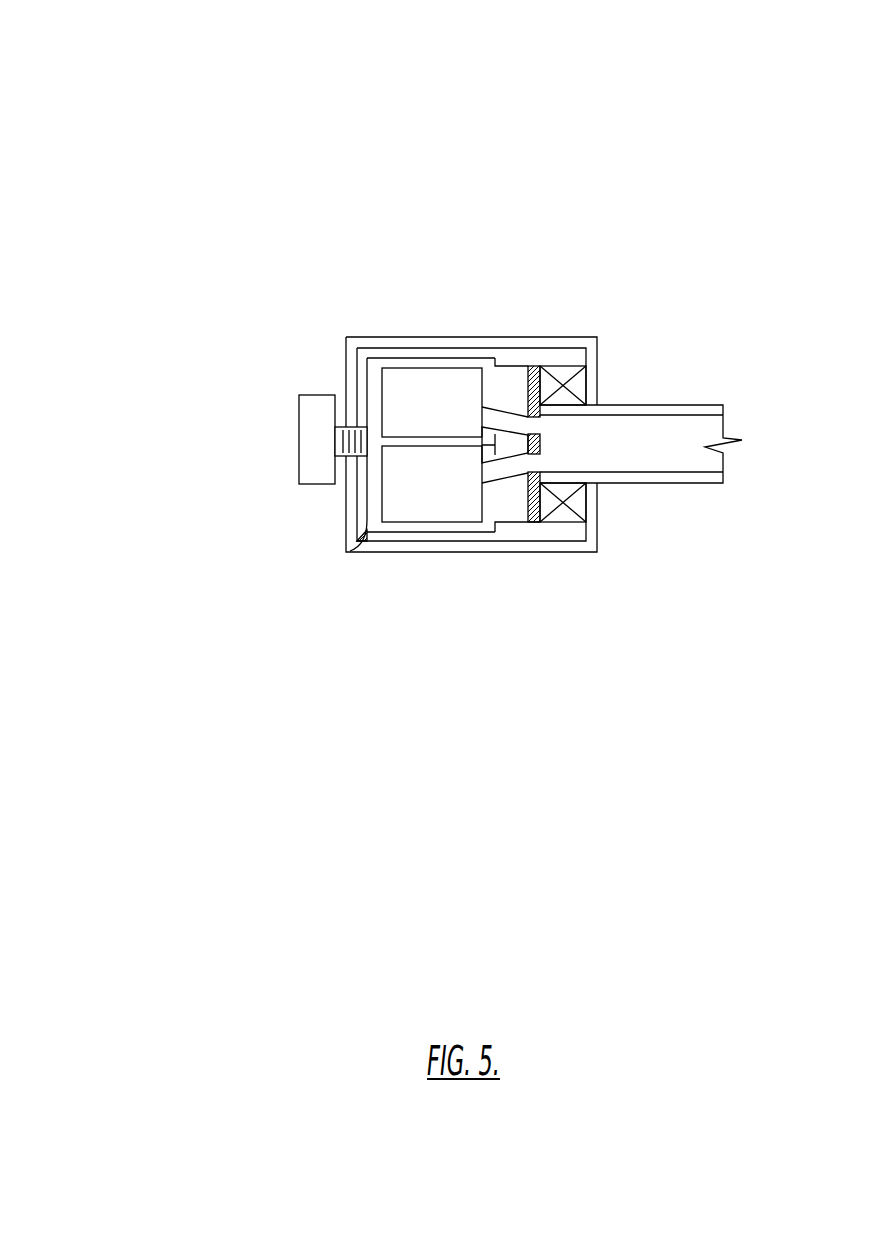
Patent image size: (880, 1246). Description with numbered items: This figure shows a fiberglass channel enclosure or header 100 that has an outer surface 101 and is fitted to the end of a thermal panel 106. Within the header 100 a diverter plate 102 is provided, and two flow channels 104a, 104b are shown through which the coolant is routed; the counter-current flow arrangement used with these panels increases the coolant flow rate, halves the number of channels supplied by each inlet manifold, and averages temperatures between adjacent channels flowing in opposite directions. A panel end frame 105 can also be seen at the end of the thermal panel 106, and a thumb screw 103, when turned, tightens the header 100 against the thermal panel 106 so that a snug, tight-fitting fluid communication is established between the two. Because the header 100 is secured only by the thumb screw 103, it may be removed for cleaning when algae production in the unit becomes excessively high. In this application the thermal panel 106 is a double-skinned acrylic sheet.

The channel enclosure or header 100 is at (262, 105).
The outer surface 101 is at (578, 335).
The diverter plate 102 is at (514, 365).
The thumb screw 103 is at (284, 427).
The flow channel 104a is at (423, 492).
The flow channel 104b is at (403, 402).
The panel end frame 105 is at (566, 522).
The thermal panel 106 is at (664, 474).